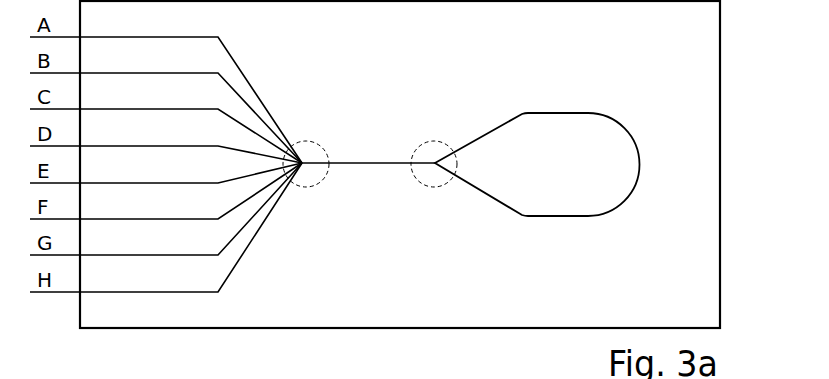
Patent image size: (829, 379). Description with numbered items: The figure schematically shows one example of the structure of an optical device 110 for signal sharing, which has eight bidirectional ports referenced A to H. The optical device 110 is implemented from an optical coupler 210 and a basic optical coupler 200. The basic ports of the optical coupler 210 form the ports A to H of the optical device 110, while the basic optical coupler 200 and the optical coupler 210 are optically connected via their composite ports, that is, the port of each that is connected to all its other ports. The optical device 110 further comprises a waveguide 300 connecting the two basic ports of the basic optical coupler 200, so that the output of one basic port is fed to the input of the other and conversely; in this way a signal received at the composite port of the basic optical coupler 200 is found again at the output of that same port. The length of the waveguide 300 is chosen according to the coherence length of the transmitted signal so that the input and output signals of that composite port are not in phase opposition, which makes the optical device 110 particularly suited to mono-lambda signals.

The optical device for signal sharing 110 is at (720, 68).
The optical coupler 210 is at (323, 142).
The basic optical coupler 200 is at (418, 143).
The waveguide 300 is at (548, 216).